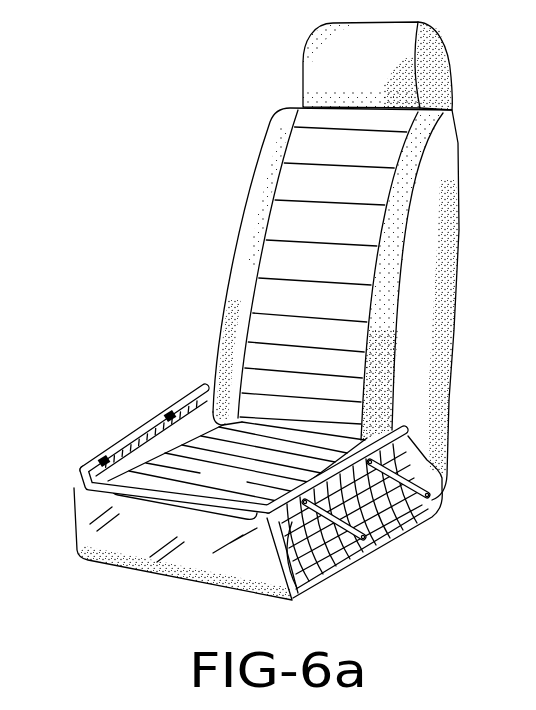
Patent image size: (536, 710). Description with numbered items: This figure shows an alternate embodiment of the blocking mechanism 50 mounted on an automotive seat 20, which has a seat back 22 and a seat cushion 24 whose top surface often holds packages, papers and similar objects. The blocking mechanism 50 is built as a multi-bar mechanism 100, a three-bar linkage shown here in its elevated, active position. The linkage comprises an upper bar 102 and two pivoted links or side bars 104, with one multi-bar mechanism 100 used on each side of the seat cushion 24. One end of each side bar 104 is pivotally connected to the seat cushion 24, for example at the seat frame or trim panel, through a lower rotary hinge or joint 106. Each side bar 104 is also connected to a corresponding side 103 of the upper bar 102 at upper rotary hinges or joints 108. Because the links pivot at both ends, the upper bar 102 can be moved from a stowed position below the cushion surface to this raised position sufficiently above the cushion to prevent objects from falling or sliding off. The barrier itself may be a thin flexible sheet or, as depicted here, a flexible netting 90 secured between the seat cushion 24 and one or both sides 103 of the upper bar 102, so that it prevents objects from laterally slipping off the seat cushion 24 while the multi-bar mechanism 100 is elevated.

The automotive seat 20 is at (228, 168).
The seat back 22 is at (285, 265).
The seat cushion 24 is at (280, 445).
The blocking mechanism 50 is at (146, 519).
The netting 90 is at (393, 527).
The multi-bar mechanism 100 is at (212, 464).
The upper bar 102 is at (222, 508).
The side of bar 103 is at (203, 383).
The pivoted link 104 is at (170, 412).
The lower rotary hinge 106 is at (366, 539).
The upper rotary hinge 108 is at (160, 413).